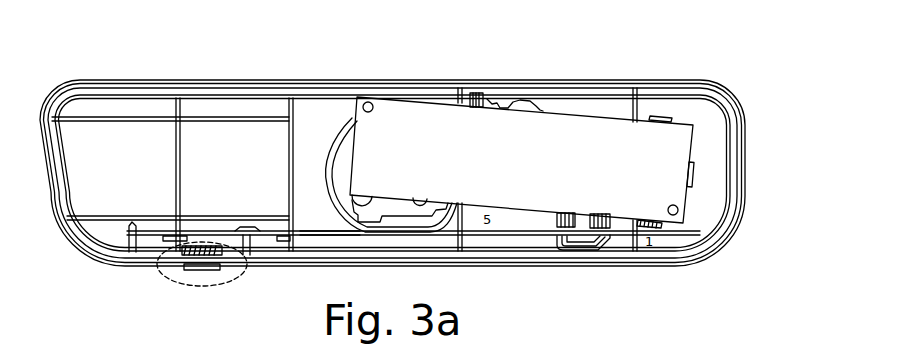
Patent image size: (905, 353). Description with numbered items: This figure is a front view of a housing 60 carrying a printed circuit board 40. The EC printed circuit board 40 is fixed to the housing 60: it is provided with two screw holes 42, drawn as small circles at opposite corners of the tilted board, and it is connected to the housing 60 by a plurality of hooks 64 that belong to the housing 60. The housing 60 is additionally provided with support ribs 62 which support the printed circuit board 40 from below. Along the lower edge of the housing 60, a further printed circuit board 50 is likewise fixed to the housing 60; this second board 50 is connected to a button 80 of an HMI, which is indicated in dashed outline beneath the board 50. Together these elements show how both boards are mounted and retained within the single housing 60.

The housing 60 is at (212, 77).
The printed circuit board 40 is at (703, 135).
The screw holes 42 is at (368, 101).
The hooks 64 is at (479, 93).
The support ribs 62 is at (666, 237).
The printed circuit board 50 is at (146, 249).
The button 80 is at (200, 280).